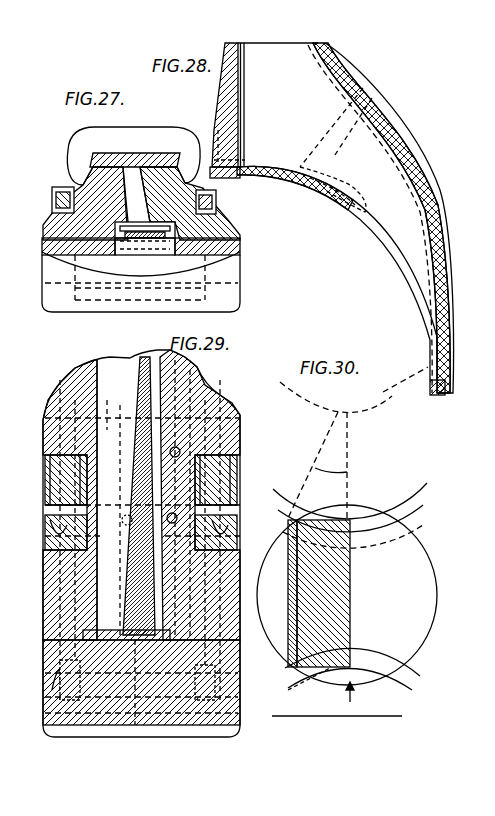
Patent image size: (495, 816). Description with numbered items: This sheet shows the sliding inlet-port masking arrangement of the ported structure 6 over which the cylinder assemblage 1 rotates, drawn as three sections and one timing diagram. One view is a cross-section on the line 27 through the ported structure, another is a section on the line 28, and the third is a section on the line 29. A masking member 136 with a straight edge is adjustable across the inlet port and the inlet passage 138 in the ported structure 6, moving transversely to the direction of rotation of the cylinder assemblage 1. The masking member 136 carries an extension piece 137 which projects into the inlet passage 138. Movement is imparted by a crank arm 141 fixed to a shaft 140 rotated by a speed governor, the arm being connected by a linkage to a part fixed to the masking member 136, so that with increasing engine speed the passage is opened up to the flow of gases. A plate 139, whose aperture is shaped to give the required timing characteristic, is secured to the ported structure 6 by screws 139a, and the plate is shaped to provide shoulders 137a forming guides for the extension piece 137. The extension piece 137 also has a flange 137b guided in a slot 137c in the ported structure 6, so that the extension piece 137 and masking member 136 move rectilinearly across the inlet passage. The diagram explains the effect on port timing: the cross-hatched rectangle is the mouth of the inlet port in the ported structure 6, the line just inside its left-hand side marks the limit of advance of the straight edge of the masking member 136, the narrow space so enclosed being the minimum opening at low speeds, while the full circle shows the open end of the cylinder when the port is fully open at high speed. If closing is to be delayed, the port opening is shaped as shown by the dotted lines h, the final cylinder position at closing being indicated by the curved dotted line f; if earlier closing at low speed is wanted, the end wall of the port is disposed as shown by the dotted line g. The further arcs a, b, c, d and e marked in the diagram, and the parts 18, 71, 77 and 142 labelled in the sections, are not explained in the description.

In FIG. 27, the cylinder assemblage 1 is at (240, 263).
In FIG. 27, the ported structure 6 is at (205, 204).
In FIG. 28, the ported structure 6 is at (228, 70).
In FIG. 29, the ported structure 6 is at (78, 392).
In FIG. 29, the bearing 18 is at (225, 472).
In FIG. 28, the section line 27— 27 is at (423, 127).
In FIG. 29, the section line 28— 28 is at (100, 364).
In FIG. 28, the section line 29— 29 is at (265, 42).
In FIG. 27, the bearing ring 71 is at (60, 196).
In FIG. 29, the bearing ring 71 is at (215, 455).
In FIG. 29, the retainer 77 is at (222, 510).
In FIG. 30, the retainer 77 is at (288, 519).
In FIG. 27, the masking member 136 is at (130, 254).
In FIG. 28, the masking member 136 is at (420, 285).
In FIG. 29, the masking member 136 is at (144, 695).
In FIG. 27, the extension piece 137 is at (140, 200).
In FIG. 28, the extension piece 137 is at (393, 223).
In FIG. 29, the extension piece 137 is at (143, 372).
In FIG. 28, the shoulders 137a is at (340, 203).
In FIG. 29, the flange 137b is at (190, 634).
In FIG. 30, the flange 137b is at (290, 663).
In FIG. 29, the slot 137c is at (222, 676).
In FIG. 30, the slot 137c is at (288, 683).
In FIG. 27, the inlet passage 138 is at (93, 160).
In FIG. 27, the plate 139 is at (68, 248).
In FIG. 28, the plate 139 is at (238, 178).
In FIG. 29, the plate 139 is at (241, 537).
In FIG. 28, the screws 139a is at (245, 142).
In FIG. 27, the shaft 140 is at (190, 133).
In FIG. 28, the shaft 140 is at (343, 120).
In FIG. 29, the shaft 140 is at (175, 428).
In FIG. 28, the crank arm 141 is at (330, 179).
In FIG. 29, the crank arm 141 is at (180, 450).
In FIG. 27, the blade base bar 142 is at (165, 248).
In FIG. 29, the blade base bar 142 is at (118, 632).
In FIG. 30, the arc a is at (346, 692).
In FIG. 30, the arc b is at (354, 666).
In FIG. 30, the arc c is at (355, 511).
In FIG. 30, the arc d is at (347, 577).
In FIG. 30, the arc e is at (358, 529).
In FIG. 30, the curved dotted line f is at (354, 390).
In FIG. 30, the dotted line g is at (338, 520).
In FIG. 30, the dotted lines h is at (317, 466).